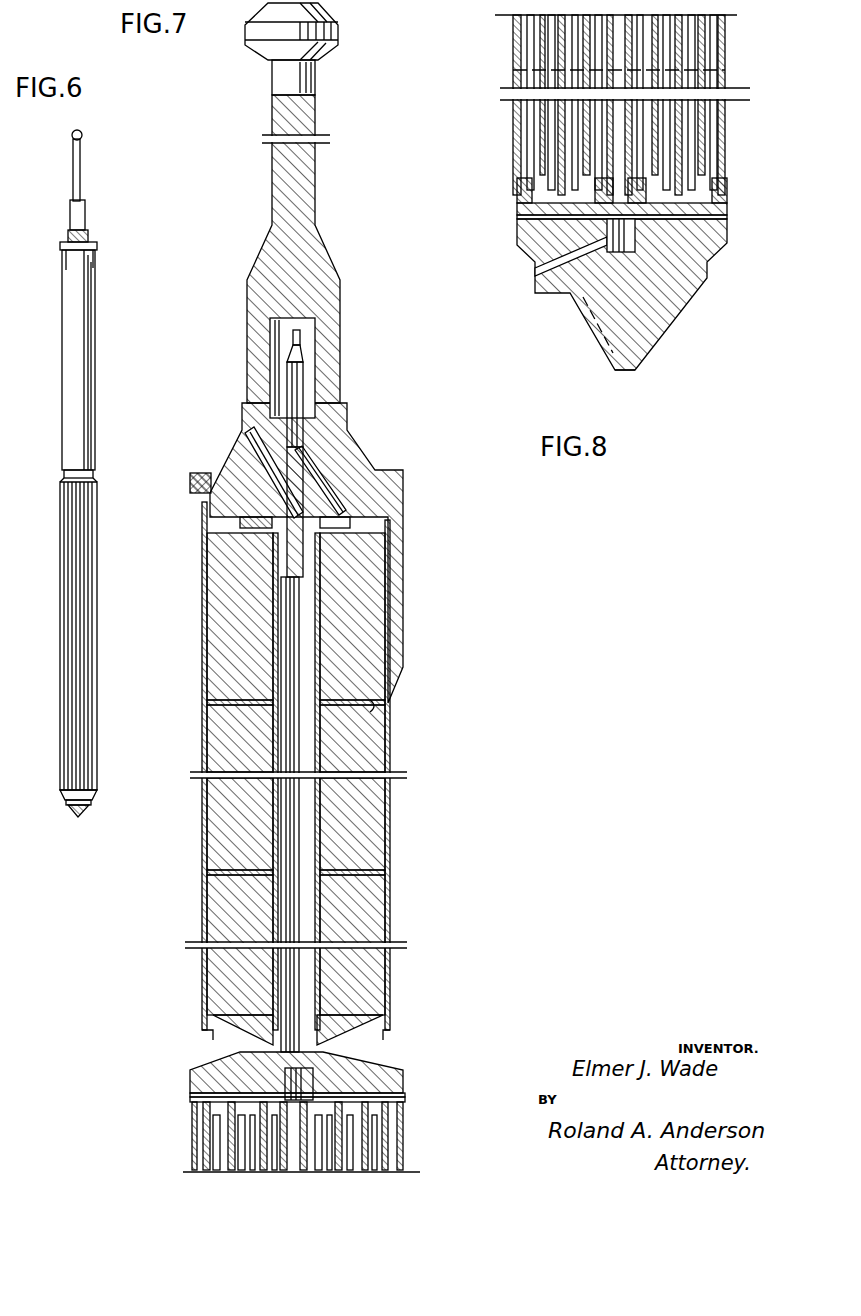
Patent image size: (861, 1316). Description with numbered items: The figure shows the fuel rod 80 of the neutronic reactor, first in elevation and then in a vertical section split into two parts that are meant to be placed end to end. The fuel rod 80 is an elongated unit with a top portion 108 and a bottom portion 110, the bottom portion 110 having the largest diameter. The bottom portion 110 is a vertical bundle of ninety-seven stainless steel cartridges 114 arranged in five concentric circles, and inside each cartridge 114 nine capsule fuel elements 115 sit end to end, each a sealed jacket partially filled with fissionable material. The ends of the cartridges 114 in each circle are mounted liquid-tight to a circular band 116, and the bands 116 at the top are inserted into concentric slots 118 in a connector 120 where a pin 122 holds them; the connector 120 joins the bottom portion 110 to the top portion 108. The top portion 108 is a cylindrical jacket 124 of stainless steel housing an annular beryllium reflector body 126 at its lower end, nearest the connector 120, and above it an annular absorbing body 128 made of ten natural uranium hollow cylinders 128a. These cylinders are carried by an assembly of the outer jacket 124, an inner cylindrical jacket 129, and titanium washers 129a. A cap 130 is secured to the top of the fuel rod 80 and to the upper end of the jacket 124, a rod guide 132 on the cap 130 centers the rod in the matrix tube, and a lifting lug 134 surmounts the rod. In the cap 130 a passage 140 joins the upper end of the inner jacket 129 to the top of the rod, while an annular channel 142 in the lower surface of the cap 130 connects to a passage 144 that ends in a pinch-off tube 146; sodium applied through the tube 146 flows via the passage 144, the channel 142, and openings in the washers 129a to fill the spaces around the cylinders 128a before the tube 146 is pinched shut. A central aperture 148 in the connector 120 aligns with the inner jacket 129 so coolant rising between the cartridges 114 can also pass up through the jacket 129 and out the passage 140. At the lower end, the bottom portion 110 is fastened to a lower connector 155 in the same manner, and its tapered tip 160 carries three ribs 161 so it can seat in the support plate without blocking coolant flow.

In FIG. 6, the fuel rod 80 is at (109, 473).
In FIG. 7, the fuel rod 80 is at (299, 588).
In FIG. 8, the fuel rod 80 is at (598, 204).
In FIG. 6, the top portion 108 is at (88, 353).
In FIG. 7, the top portion 108 is at (397, 858).
In FIG. 6, the bottom portion 110 is at (88, 602).
In FIG. 7, the bottom portion 110 is at (293, 1137).
In FIG. 8, the bottom portion 110 is at (598, 109).
In FIG. 7, the cartridges 114 is at (196, 1152).
In FIG. 8, the cartridges 114 is at (541, 121).
In FIG. 7, the capsule fuel elements 115 is at (226, 1166).
In FIG. 8, the capsule fuel elements 115 is at (717, 64).
In FIG. 7, the circular band 116 is at (191, 1101).
In FIG. 8, the circular band 116 is at (517, 207).
In FIG. 7, the concentric slots 118 is at (405, 1080).
In FIG. 7, the connector 120 is at (219, 1066).
In FIG. 7, the pin 122 is at (196, 1096).
In FIG. 8, the pin 122 is at (517, 226).
In FIG. 7, the cylindrical jacket 124 is at (203, 625).
In FIG. 7, the body of neutron-reflector material 126 is at (219, 921).
In FIG. 7, the body of neutron-absorbing material 128 is at (208, 715).
In FIG. 7, the natural uranium hollow cylinders 128a is at (219, 675).
In FIG. 7, the inner cylindrical jacket 129 is at (308, 620).
In FIG. 7, the titanium washers 129a is at (378, 706).
In FIG. 7, the cap 130 is at (226, 474).
In FIG. 7, the rod guide 132 is at (400, 518).
In FIG. 6, the lifting lug 134 is at (78, 170).
In FIG. 7, the lifting lug 134 is at (263, 177).
In FIG. 7, the passage 140 is at (246, 446).
In FIG. 7, the annular channel 142 is at (238, 529).
In FIG. 7, the passage 144 is at (341, 456).
In FIG. 7, the pinch-off tube 146 is at (301, 344).
In FIG. 7, the central aperture 148 is at (318, 1086).
In FIG. 8, the lower connector 155 is at (712, 282).
In FIG. 8, the tapered tip 160 is at (641, 362).
In FIG. 8, the ribs 161 is at (612, 353).